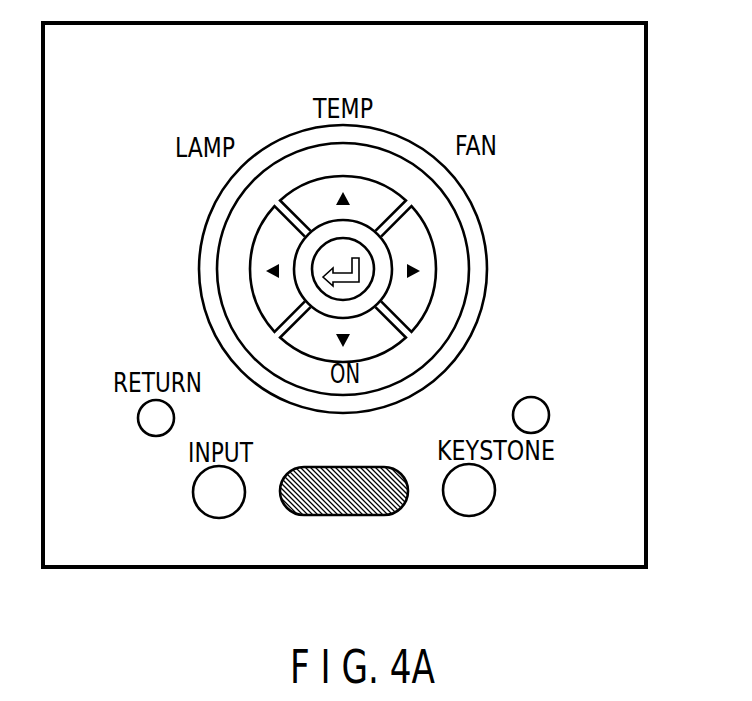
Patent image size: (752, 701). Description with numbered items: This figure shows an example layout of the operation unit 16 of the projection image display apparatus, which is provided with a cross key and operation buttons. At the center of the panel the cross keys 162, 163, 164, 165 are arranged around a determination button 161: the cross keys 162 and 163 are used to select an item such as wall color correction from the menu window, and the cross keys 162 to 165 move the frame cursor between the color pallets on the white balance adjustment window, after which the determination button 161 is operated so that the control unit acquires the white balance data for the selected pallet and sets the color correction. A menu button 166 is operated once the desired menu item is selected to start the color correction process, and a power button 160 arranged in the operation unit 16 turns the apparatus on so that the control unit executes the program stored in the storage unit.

The operation unit 16 is at (647, 63).
The power button 160 is at (341, 516).
The determination button 161 is at (345, 252).
The cross key 162 is at (371, 188).
The cross key 163 is at (362, 338).
The cross key 164 is at (263, 246).
The cross key 165 is at (427, 247).
The menu button 166 is at (550, 415).